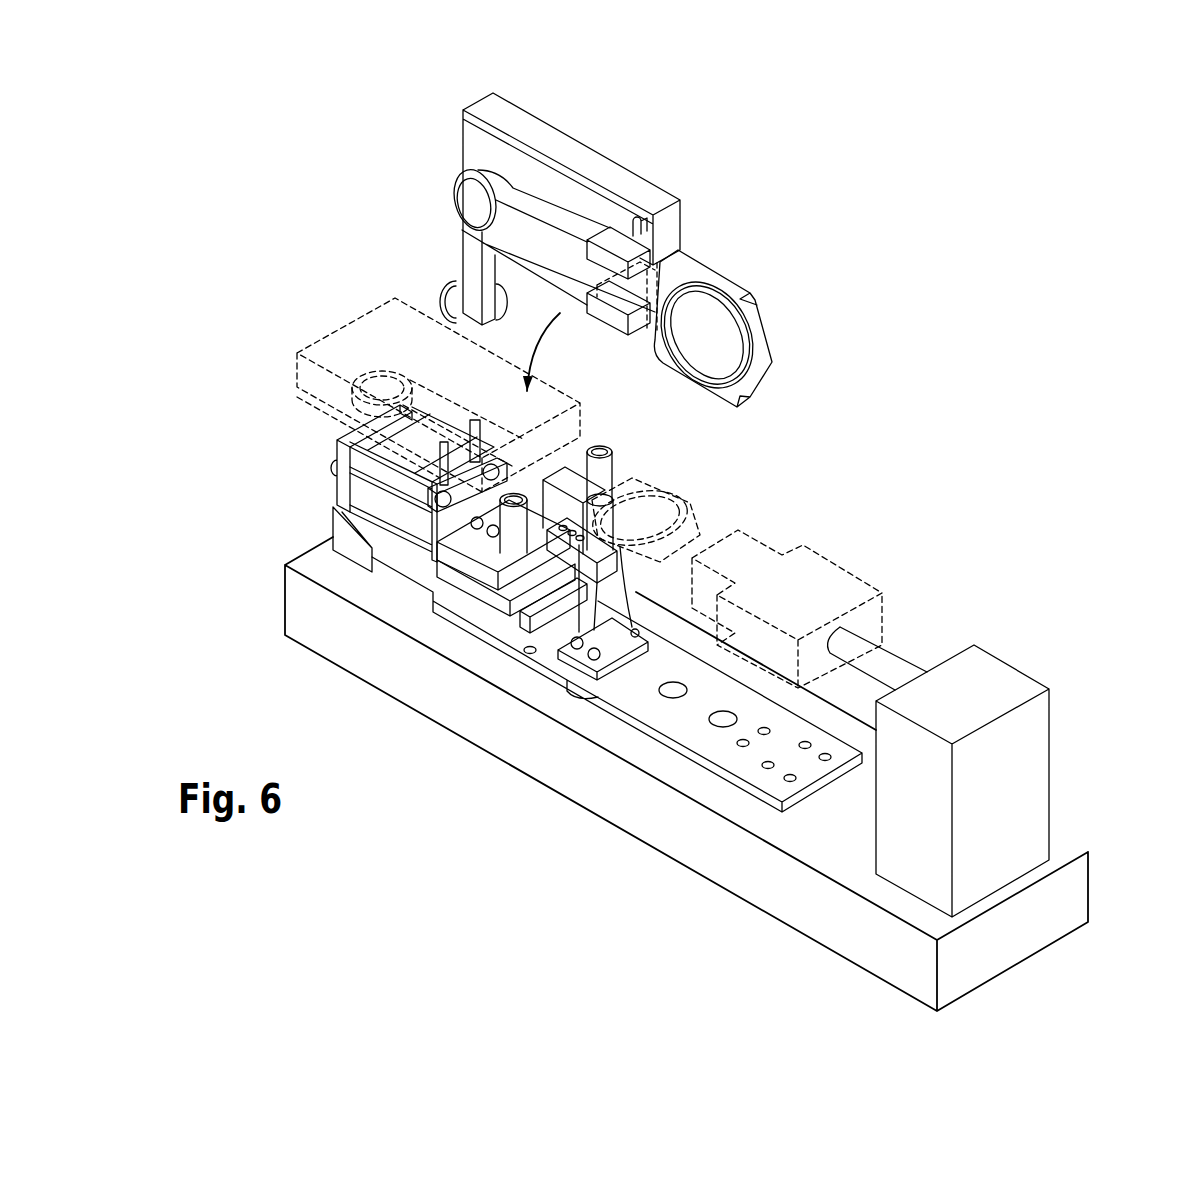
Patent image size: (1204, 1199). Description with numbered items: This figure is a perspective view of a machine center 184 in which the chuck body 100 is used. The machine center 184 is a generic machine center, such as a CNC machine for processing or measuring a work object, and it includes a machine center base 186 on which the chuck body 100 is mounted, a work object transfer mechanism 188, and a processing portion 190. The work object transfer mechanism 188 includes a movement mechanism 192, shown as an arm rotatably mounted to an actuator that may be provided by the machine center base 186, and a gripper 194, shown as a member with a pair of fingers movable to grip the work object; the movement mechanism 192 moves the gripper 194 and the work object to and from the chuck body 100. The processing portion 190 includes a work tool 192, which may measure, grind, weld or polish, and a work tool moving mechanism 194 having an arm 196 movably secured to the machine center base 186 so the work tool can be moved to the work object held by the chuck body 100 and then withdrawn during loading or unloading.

The chuck body 100 is at (326, 492).
The machine center 184 is at (700, 552).
The machine center base 186 is at (1069, 888).
The work object transfer mechanism 188 is at (694, 214).
The processing portion 190 is at (902, 508).
The movement mechanism 192 is at (846, 568).
The gripper 194 is at (1000, 675).
The arm 196 is at (884, 665).